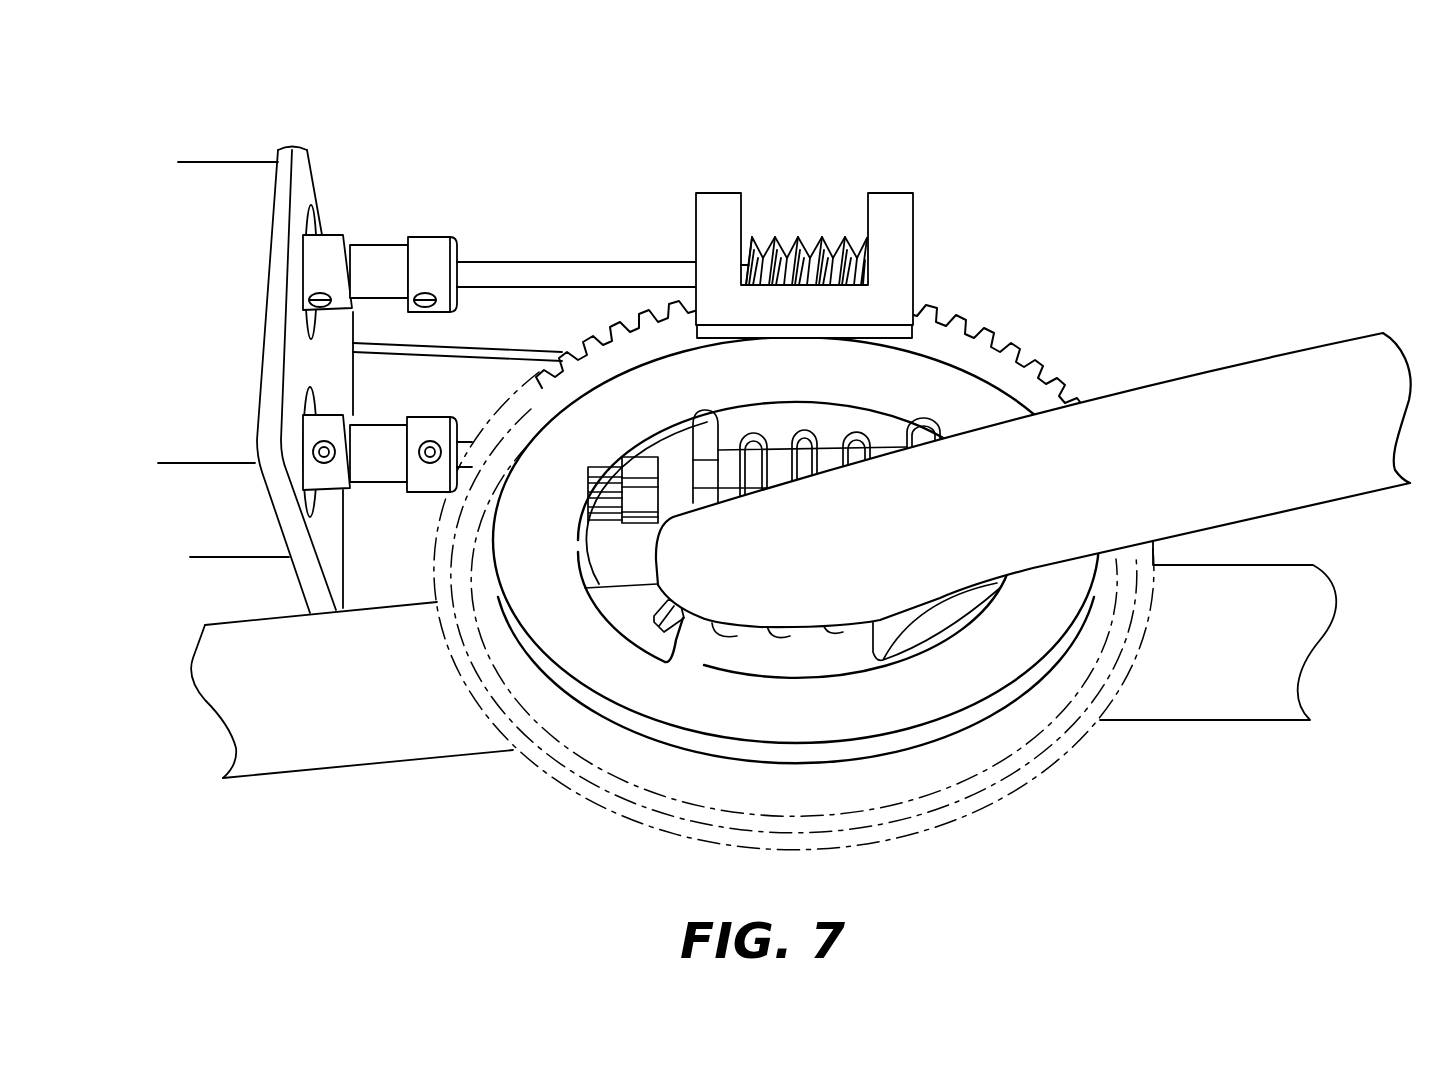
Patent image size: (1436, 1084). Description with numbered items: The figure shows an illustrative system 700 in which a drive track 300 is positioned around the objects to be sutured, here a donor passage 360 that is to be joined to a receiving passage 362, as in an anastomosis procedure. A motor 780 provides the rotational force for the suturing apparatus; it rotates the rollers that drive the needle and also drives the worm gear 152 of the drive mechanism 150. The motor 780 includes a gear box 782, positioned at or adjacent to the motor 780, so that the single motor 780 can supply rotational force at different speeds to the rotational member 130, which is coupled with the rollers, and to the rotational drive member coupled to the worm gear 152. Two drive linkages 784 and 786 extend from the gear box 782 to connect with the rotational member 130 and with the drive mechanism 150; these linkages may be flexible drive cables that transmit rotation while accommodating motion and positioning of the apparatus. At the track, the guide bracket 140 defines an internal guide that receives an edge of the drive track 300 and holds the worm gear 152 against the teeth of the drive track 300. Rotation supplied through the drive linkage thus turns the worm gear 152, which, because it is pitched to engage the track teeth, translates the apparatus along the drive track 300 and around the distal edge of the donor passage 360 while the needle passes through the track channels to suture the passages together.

The system 700 is at (748, 446).
The motor 780 is at (391, 489).
The gear box 782 is at (211, 398).
The drive linkage 784 is at (395, 463).
The drive linkage 786 is at (372, 260).
The rotational member 130 is at (466, 445).
The guide bracket 140 is at (713, 205).
The drive mechanism 150 is at (778, 215).
The worm gear 152 is at (810, 238).
The drive track 300 is at (1000, 340).
The donor passage 360 is at (1194, 398).
The receiving passage 362 is at (1197, 692).